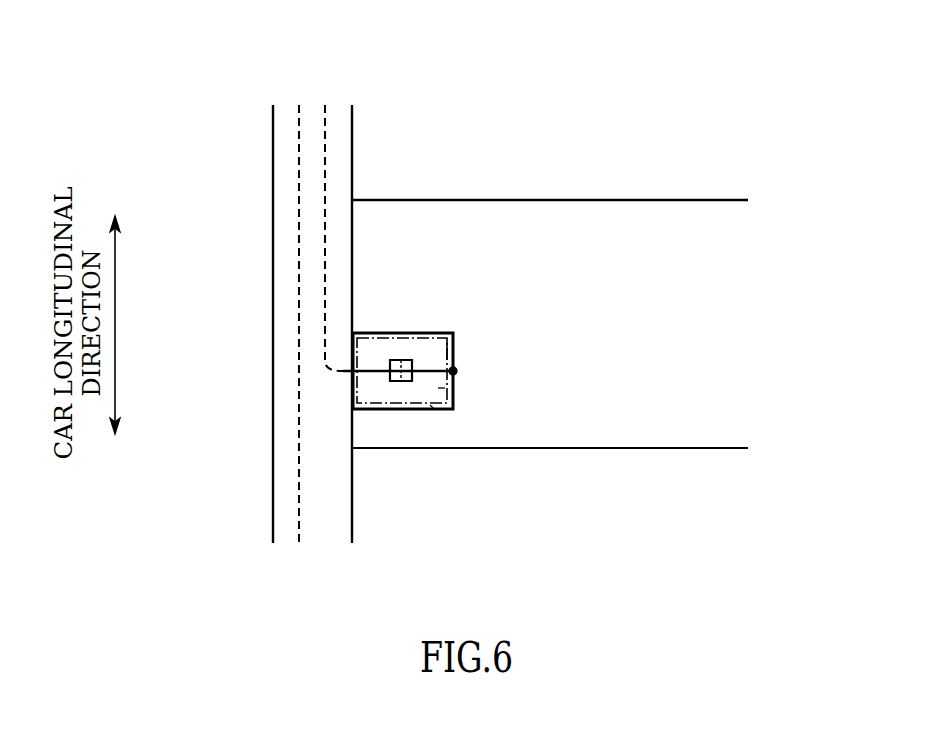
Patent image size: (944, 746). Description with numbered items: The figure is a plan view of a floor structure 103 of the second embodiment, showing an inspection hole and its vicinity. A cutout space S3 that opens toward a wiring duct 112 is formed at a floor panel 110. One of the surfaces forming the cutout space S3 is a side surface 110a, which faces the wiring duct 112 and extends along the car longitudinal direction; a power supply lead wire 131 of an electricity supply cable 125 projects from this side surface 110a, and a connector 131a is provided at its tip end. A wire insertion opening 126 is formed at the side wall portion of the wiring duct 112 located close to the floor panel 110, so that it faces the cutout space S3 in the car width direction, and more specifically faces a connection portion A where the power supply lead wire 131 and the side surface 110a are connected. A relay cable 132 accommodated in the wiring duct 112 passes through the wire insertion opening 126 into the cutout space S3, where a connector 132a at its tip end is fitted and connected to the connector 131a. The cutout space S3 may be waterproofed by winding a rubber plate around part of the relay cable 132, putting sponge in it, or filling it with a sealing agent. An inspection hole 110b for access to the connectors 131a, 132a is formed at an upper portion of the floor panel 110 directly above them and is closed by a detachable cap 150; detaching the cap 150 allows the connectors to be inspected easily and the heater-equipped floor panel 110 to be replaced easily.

The floor structure 103 is at (728, 110).
The floor panel 110 is at (680, 188).
The side surface 110a is at (440, 350).
The inspection hole 110b is at (395, 346).
The wiring duct 112 is at (273, 142).
The electricity supply cable 125 is at (327, 152).
The wire insertion opening 126 is at (353, 353).
The power supply lead wire 131 is at (432, 355).
The connector 131a is at (405, 382).
The relay cable 132 is at (325, 180).
The connector 132a is at (398, 382).
The detachable cap 150 is at (432, 410).
The connection portion A is at (456, 371).
The cutout space S3 is at (438, 388).